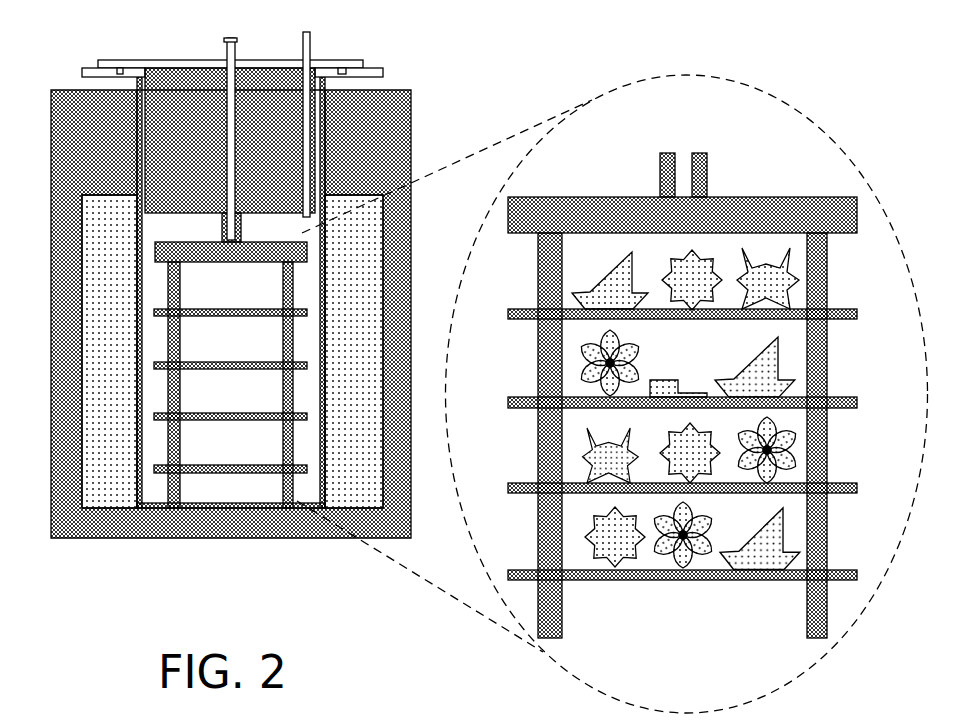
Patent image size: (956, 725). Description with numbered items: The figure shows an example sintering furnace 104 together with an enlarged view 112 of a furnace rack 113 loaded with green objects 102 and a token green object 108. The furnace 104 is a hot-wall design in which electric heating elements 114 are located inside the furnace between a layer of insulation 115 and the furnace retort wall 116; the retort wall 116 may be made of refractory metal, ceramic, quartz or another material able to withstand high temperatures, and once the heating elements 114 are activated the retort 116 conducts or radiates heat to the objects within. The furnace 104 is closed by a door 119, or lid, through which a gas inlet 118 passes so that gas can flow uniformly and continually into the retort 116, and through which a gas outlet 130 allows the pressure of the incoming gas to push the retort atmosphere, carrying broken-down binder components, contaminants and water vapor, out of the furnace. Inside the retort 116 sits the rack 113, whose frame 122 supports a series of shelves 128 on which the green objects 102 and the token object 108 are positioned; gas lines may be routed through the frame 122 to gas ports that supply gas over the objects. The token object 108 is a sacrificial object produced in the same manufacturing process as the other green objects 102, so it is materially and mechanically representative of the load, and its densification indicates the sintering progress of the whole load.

The sintering furnace 104 is at (70, 44).
The insulation 115 is at (68, 97).
The heating elements 114 is at (110, 200).
The retort wall 116 is at (137, 310).
The door 119 is at (173, 78).
The gas inlet 118 is at (225, 38).
The gas outlet 130 is at (312, 42).
The furnace rack 113 is at (197, 242).
The frame 122 is at (283, 290).
The shelves 128 is at (245, 412).
The enlarged view 112 is at (622, 86).
The green objects 102 is at (620, 262).
The token green object 108 is at (662, 380).